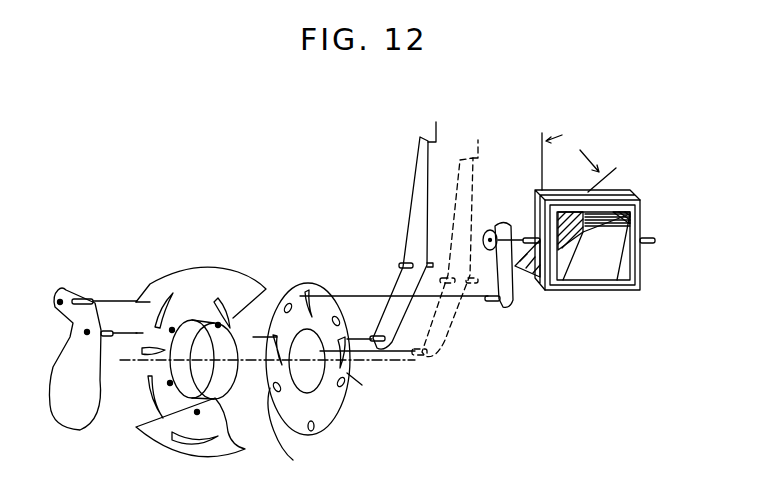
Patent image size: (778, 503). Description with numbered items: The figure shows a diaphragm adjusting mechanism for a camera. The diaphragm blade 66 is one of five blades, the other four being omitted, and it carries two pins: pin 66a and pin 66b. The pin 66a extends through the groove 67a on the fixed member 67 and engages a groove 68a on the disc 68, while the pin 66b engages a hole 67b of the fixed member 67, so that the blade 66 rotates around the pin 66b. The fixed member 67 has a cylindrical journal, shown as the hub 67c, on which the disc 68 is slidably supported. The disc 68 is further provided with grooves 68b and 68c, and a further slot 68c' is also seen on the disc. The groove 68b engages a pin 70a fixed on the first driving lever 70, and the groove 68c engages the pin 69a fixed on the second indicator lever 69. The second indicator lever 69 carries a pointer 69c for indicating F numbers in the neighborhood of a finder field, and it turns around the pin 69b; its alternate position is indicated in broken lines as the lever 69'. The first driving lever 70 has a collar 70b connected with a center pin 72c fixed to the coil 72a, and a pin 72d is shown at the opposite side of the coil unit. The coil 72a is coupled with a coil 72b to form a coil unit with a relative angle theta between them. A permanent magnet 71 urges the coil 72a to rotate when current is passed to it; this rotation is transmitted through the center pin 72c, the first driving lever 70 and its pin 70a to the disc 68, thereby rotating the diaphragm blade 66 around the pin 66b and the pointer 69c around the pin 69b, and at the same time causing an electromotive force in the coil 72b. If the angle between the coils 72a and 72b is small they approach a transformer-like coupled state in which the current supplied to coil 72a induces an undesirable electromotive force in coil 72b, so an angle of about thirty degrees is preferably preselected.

The diaphragm blade 66 is at (67, 417).
The pin 66a is at (80, 298).
The pin 66b is at (105, 338).
The fixed member 67 is at (190, 307).
The groove 67a is at (171, 293).
The hole 67b is at (214, 306).
The hub 67c is at (246, 400).
The disc 68 is at (325, 413).
The groove 68a is at (288, 303).
The groove 68b is at (318, 300).
The groove 68c is at (371, 388).
The slot 68c' is at (301, 434).
The second indicator lever 69 is at (401, 241).
The pin 69a is at (383, 347).
The pin 69b is at (403, 261).
The pointer 69c is at (436, 122).
The lever in alternate position 69' is at (446, 260).
The first driving lever 70 is at (507, 287).
The pin 70a is at (501, 309).
The collar 70b is at (490, 230).
The permanent magnet 71 is at (587, 273).
The coil 72a is at (612, 190).
The coil 72b is at (628, 218).
The center pin 72c is at (530, 232).
The pin 72d is at (650, 245).